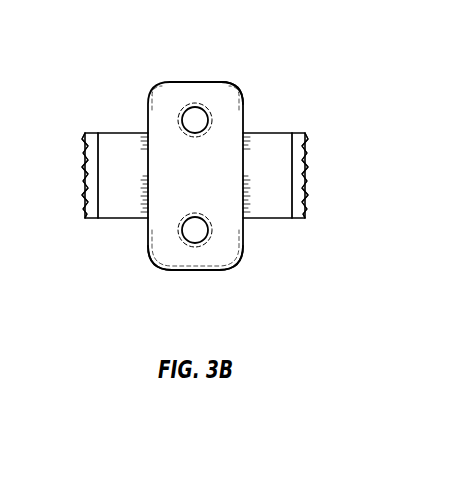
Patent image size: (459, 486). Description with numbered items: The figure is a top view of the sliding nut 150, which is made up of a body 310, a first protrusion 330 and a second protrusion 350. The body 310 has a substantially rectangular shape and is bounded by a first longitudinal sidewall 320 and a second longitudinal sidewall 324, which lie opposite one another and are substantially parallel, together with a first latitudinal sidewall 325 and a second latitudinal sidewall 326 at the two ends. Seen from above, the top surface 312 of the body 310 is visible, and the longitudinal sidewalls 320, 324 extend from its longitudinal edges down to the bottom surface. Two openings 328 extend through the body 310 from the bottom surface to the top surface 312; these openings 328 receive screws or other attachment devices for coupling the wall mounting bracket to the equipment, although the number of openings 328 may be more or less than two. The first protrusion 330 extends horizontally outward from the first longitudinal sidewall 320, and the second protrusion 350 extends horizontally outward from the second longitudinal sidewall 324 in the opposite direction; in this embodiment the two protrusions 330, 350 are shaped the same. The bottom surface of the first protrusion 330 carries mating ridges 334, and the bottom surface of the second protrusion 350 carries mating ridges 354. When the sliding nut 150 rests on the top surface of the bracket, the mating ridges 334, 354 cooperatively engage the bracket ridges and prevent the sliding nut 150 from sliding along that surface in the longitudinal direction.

The sliding nut 150 is at (300, 63).
The body 310 is at (216, 150).
The top surface 312 is at (161, 220).
The first longitudinal sidewall 320 is at (142, 172).
The second longitudinal sidewall 324 is at (244, 168).
The first latitudinal sidewall 325 is at (178, 82).
The second latitudinal sidewall 326 is at (185, 271).
The openings 328 is at (196, 119).
The first protrusion 330 is at (122, 142).
The mating ridges 334 is at (85, 207).
The second protrusion 350 is at (268, 210).
The mating ridges 354 is at (305, 203).